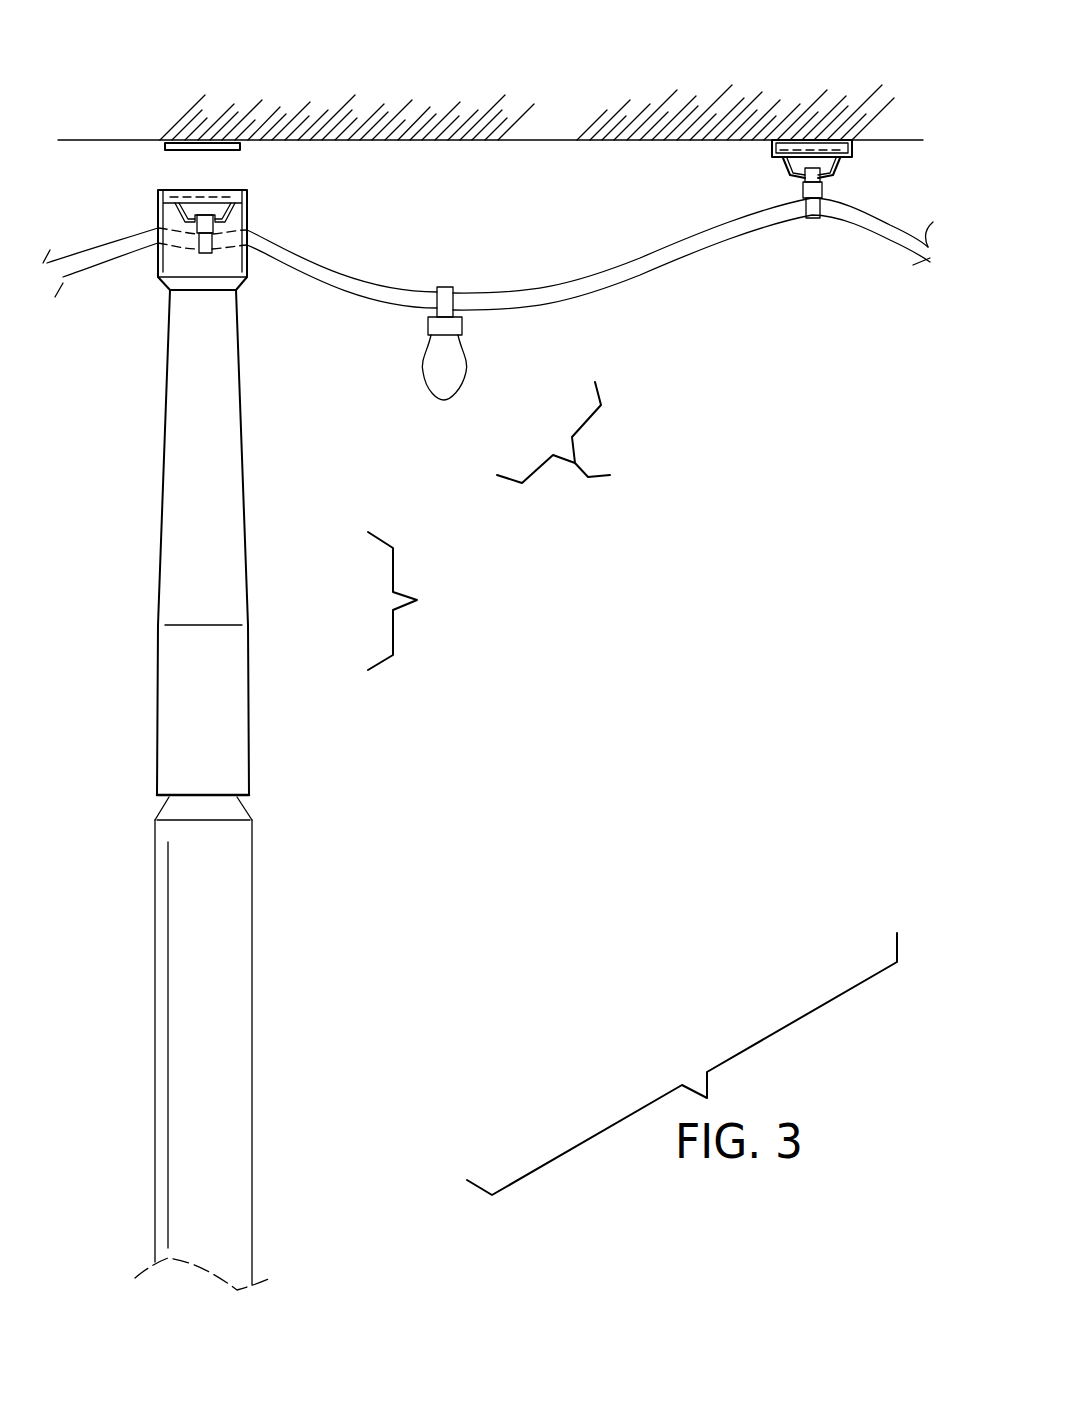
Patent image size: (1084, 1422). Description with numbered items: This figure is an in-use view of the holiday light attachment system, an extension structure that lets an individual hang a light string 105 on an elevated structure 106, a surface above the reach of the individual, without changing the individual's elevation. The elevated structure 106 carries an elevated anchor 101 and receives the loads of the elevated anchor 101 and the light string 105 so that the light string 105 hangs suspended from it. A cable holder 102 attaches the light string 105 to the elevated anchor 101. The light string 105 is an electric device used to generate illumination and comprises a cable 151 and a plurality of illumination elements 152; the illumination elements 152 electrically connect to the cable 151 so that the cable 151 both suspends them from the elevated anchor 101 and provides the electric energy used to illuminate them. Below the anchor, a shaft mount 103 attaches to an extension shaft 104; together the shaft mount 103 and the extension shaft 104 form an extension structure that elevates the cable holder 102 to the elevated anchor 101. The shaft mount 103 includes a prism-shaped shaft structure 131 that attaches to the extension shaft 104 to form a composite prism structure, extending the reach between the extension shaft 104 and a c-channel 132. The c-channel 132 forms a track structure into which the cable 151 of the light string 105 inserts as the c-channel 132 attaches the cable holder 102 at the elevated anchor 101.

The elevated anchor 101 is at (215, 143).
The cable holder 102 is at (232, 192).
The shaft mount 103 is at (424, 601).
The extension shaft 104 is at (213, 877).
The light string 105 is at (582, 439).
The elevated structure 106 is at (547, 140).
The shaft structure 131 is at (200, 662).
The c-channel 132 is at (228, 263).
The cable 151 is at (538, 307).
The illumination elements 152 is at (458, 390).